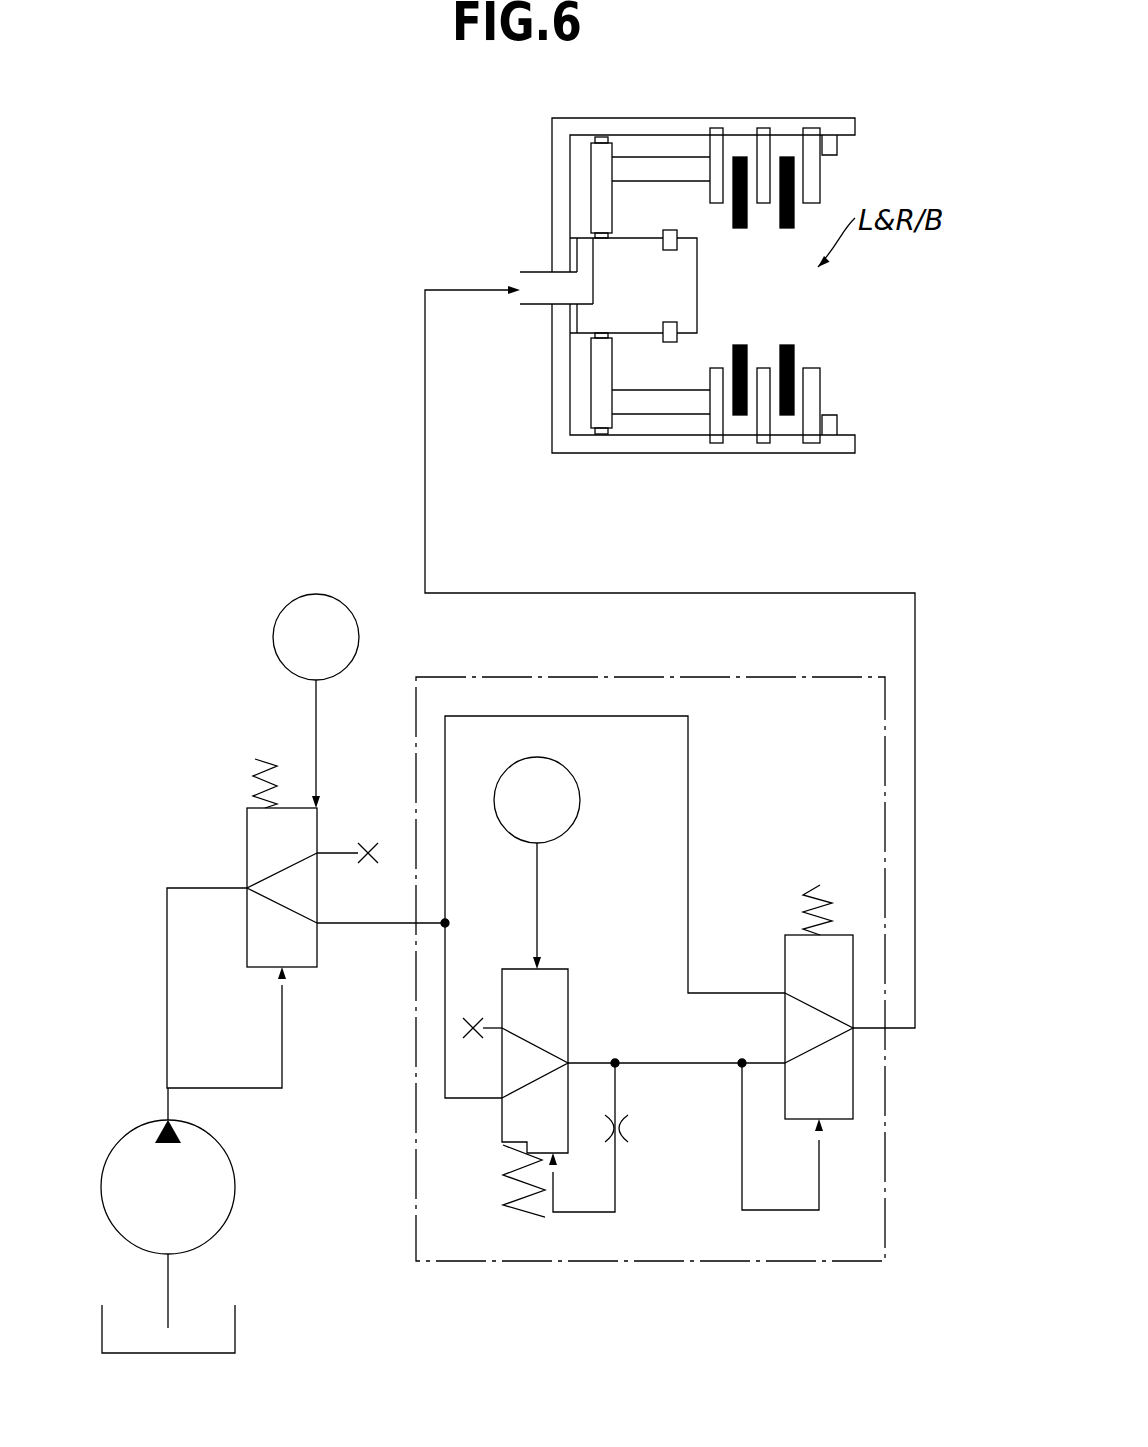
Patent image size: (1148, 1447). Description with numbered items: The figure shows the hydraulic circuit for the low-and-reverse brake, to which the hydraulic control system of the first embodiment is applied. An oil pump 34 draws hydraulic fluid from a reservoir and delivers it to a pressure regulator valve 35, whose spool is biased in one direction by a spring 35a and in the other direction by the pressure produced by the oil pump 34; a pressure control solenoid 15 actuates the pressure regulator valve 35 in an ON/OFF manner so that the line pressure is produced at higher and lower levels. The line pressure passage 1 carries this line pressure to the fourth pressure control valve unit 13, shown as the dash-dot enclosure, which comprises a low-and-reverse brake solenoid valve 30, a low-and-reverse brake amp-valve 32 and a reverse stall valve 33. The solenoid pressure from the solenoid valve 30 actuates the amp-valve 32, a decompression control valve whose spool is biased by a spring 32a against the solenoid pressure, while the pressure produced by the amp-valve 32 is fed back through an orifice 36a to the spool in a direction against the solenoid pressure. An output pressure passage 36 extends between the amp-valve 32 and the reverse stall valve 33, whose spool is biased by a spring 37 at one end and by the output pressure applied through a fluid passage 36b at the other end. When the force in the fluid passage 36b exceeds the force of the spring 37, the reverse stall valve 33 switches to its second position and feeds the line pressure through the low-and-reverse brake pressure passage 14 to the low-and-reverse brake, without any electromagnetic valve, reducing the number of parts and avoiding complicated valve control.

The line pressure passage 1 is at (368, 927).
The fourth pressure control valve unit 13 is at (660, 677).
The low-and-reverse brake pressure passage 14 is at (688, 593).
The pressure control solenoid 15 is at (274, 627).
The low-and-reverse brake solenoid valve 30 is at (580, 800).
The low-and-reverse brake amp-valve 32 is at (572, 988).
The spring 32a is at (528, 1218).
The reverse stall valve 33 is at (783, 948).
The oil pump 34 is at (235, 1178).
The pressure regulator valve 35 is at (320, 820).
The spring 35a is at (255, 790).
The output pressure passage 36 is at (680, 1066).
The orifice 36a is at (617, 1128).
The fluid passage 36b is at (778, 1212).
The spring 37 is at (812, 885).